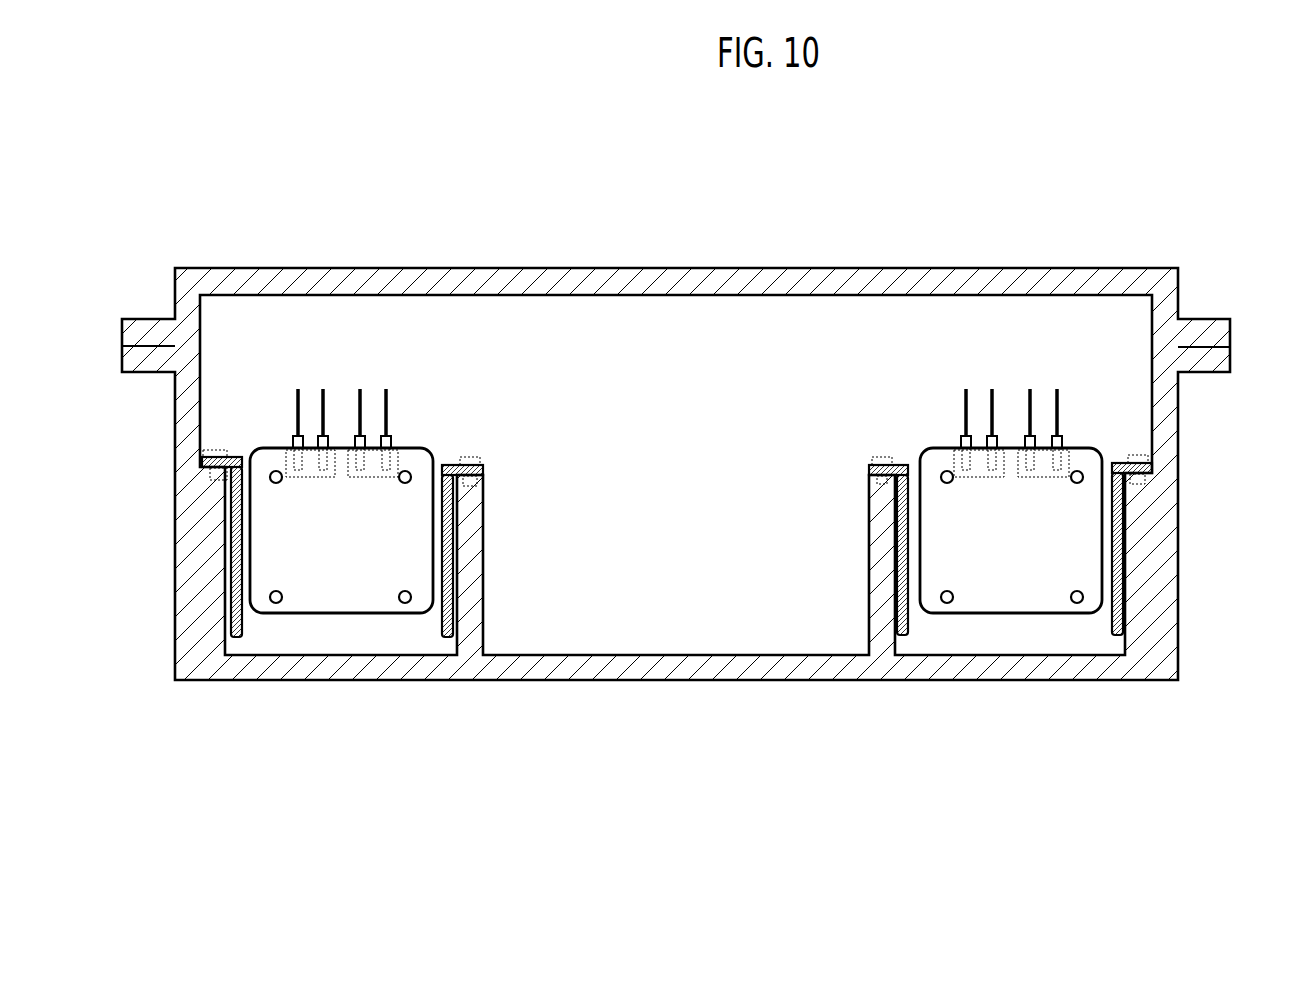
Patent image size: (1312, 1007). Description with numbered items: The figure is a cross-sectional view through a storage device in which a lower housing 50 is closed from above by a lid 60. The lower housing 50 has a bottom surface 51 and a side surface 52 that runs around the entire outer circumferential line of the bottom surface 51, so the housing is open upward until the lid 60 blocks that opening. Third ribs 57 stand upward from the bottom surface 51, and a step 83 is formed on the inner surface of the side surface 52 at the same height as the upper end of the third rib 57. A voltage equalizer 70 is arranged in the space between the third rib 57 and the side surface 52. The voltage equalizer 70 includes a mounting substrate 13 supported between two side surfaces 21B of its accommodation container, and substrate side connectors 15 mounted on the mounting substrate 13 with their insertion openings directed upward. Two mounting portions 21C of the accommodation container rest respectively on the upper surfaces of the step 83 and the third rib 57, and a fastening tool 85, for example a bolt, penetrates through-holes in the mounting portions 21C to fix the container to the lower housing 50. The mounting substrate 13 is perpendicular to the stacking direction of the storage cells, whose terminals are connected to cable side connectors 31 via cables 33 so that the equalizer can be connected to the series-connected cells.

The mounting substrate 13 is at (676, 584).
The substrate side connector 15 is at (736, 584).
The side surface 21B is at (749, 594).
The mounting portion 21C is at (734, 355).
The cable side connector 31 is at (703, 340).
The cable 33 is at (700, 324).
The lower housing 50 is at (704, 489).
The bottom surface 51 is at (676, 688).
The side surface 52 is at (673, 474).
The third rib 57 is at (676, 598).
The lid 60 is at (713, 276).
The voltage equalizer 70 is at (741, 466).
The step 83 is at (734, 476).
The fastening tool 85 is at (727, 348).